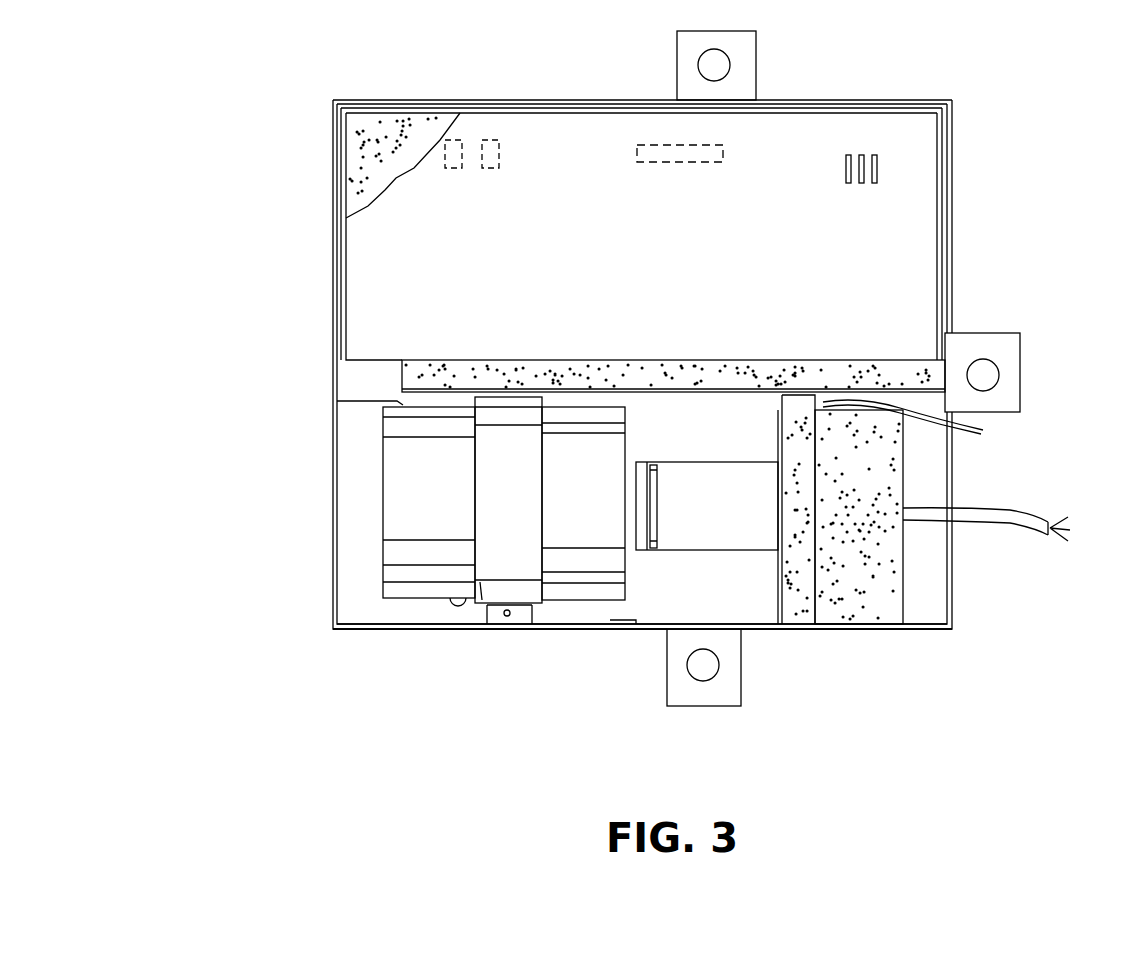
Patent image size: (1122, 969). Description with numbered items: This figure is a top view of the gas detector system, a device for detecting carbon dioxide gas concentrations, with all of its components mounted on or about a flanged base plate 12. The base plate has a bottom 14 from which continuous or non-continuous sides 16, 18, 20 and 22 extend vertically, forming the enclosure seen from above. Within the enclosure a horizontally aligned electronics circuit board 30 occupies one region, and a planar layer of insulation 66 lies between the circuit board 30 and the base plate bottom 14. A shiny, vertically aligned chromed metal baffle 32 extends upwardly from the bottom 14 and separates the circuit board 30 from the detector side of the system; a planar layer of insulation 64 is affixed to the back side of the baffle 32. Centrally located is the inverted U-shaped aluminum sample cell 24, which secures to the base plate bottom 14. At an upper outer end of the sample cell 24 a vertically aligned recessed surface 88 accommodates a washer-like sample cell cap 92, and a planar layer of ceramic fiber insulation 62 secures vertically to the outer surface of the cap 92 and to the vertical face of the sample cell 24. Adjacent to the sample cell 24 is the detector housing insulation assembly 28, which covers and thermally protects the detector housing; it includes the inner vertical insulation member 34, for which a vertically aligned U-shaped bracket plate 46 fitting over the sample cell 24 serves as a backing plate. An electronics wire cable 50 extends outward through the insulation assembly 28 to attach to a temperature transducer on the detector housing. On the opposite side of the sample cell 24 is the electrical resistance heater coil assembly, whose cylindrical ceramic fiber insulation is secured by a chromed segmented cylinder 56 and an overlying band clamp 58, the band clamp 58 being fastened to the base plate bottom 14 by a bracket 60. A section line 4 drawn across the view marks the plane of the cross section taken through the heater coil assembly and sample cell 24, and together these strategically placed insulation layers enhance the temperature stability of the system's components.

The section line 4- 4 is at (1105, 501).
The flanged base plate 12 is at (688, 613).
The bottom 14 is at (718, 615).
The side 16 is at (452, 630).
The side 18 is at (330, 562).
The side 20 is at (538, 100).
The side 22 is at (955, 227).
The aluminum sample cell 24 is at (708, 462).
The detector housing insulation assembly 28 is at (876, 582).
The electronics circuit board 30 is at (912, 179).
The chromed metal baffle 32 is at (409, 394).
The inner vertical insulation member 34 is at (787, 613).
The U-shaped bracket plate 46 is at (777, 573).
The electronics wire cable 50 is at (1035, 527).
The chromed segmented cylinder 56 is at (392, 452).
The band clamp 58 is at (480, 582).
The bracket 60 is at (518, 615).
The planar layer of ceramic fiber insulation 62 is at (640, 545).
The planar layer of insulation 64 is at (402, 380).
The planar layer of insulation 66 is at (386, 127).
The recessed surface 88 is at (655, 528).
The sample cell cap 92 is at (652, 467).